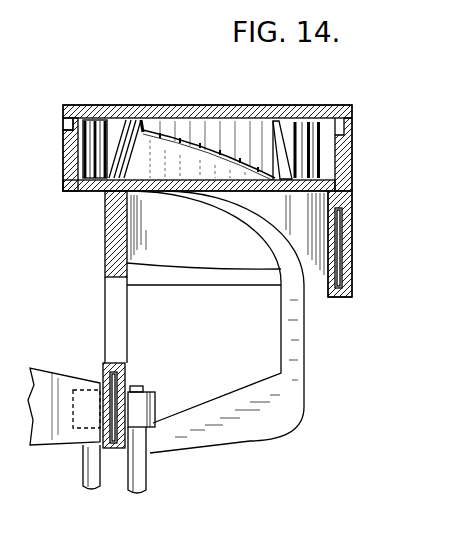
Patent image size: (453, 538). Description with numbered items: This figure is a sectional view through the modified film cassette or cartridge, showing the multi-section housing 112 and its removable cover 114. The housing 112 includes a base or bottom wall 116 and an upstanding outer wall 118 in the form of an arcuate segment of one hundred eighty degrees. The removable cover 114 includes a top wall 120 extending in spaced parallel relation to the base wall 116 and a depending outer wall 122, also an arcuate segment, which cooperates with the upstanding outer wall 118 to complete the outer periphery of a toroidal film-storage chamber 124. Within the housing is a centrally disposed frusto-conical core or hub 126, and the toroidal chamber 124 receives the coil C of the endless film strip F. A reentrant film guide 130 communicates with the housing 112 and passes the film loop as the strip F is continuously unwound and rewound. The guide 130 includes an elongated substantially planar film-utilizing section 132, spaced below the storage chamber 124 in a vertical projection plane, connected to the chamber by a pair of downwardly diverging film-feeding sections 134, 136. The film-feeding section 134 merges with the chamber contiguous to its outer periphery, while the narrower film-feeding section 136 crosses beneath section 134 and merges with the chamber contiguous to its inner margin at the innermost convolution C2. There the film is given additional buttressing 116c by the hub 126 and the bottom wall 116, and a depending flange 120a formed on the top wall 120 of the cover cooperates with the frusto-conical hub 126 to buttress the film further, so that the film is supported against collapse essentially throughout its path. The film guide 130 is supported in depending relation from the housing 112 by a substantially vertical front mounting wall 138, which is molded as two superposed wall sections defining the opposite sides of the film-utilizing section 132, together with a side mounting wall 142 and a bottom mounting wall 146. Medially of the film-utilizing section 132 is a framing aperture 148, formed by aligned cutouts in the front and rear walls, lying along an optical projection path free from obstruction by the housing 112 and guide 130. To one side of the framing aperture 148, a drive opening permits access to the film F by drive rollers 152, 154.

The housing 112 is at (60, 170).
The removable cover 114 is at (178, 100).
The base or bottom wall 116 is at (82, 192).
The buttressing 116c is at (232, 196).
The upstanding outer wall 118 is at (63, 150).
The top wall 120 is at (135, 118).
The depending flange 120a is at (215, 130).
The depending outer wall 122 is at (63, 114).
The toroidal film-storage chamber 124 is at (327, 120).
The frusto-conical core or hub 126 is at (288, 135).
The reentrant film guide 130 is at (311, 384).
The film-utilizing section 132 is at (125, 362).
The film-feeding section 134 is at (353, 247).
The film-feeding section 136 is at (277, 228).
The front mounting wall 138 is at (105, 247).
The side mounting wall 142 is at (287, 348).
The bottom mounting wall 146 is at (248, 428).
The framing aperture 148 is at (130, 392).
The drive roller 152 is at (156, 410).
The drive roller 154 is at (73, 428).
The film strip F is at (97, 120).
The coil C is at (320, 150).
The innermost convolution C2 is at (183, 200).